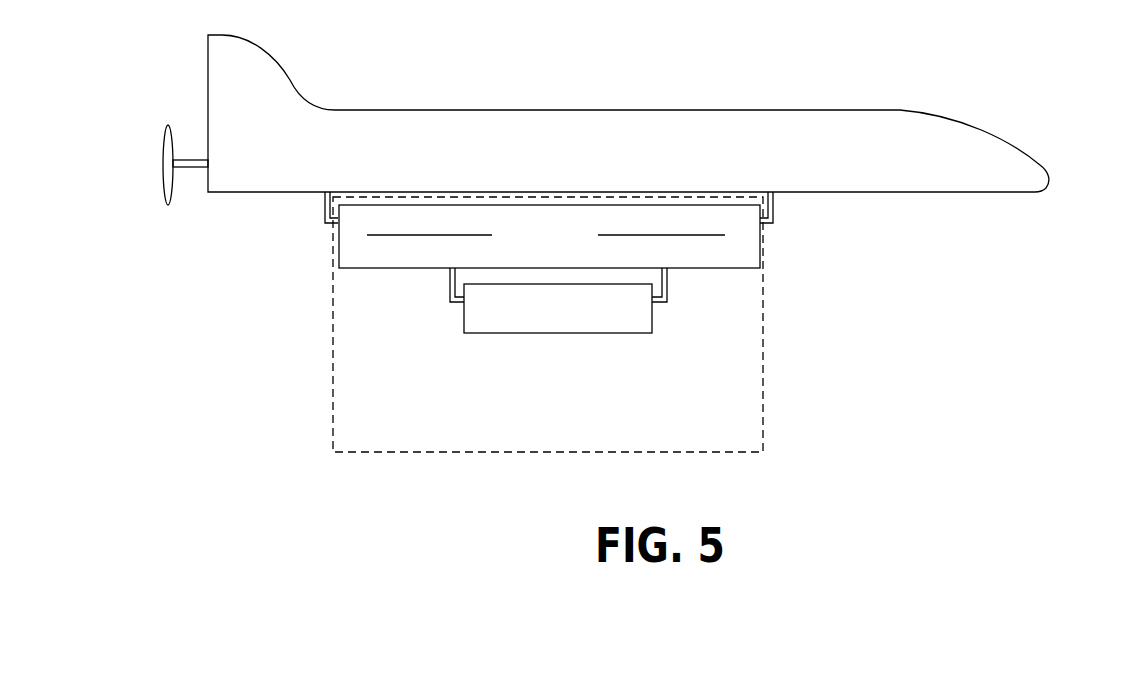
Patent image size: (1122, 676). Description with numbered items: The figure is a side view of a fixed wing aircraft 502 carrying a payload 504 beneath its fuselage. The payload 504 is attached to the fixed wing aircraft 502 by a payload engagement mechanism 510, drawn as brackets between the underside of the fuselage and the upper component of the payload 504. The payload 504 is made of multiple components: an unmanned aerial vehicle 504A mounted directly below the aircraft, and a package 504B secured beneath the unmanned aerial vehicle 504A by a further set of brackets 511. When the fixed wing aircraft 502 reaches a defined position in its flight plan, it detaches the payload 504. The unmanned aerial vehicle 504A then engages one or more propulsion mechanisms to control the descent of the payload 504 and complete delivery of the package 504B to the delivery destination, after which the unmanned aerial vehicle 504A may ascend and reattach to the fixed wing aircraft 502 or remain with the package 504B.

The fixed wing aircraft 502 is at (1018, 157).
The payload 504 is at (333, 380).
The unmanned aerial vehicle (UAV) 504A is at (765, 262).
The package 504B is at (557, 333).
The payload engagement mechanism 510 is at (775, 213).
The lower mounting brackets 511 is at (670, 302).